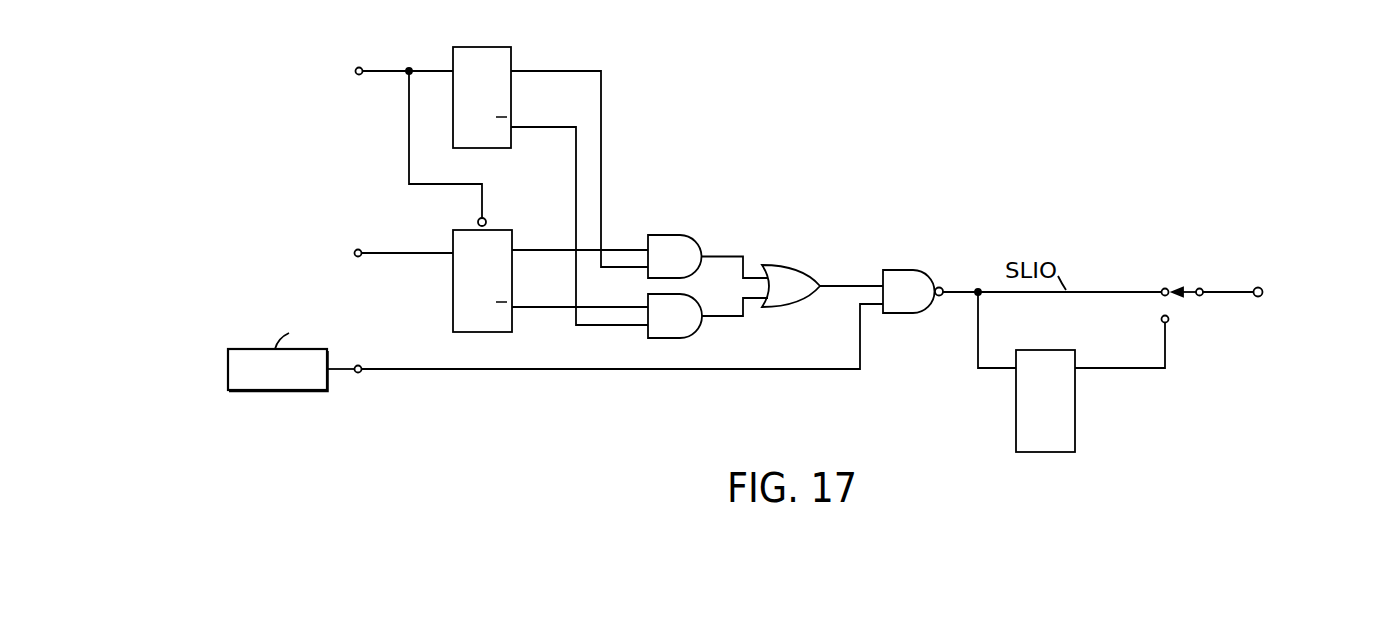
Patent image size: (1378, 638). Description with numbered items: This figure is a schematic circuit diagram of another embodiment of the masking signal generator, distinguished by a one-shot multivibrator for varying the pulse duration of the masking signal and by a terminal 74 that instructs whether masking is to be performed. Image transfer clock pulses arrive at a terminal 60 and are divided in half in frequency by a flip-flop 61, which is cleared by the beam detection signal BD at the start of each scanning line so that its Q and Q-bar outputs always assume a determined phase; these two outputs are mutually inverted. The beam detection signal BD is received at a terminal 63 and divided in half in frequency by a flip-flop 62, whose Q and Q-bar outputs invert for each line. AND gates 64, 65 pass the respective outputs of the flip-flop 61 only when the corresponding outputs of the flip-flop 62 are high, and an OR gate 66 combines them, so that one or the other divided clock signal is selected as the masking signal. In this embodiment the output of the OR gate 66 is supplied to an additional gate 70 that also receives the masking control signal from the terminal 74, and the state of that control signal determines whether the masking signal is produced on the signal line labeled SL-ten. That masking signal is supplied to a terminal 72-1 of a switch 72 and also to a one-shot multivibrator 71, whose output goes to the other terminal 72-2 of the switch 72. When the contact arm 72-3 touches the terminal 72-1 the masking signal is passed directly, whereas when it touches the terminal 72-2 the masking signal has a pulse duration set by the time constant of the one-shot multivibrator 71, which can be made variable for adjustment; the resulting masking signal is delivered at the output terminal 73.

The terminal 60 is at (361, 250).
The flip-flop 61 is at (503, 229).
The flip-flop 62 is at (473, 46).
The terminal 63 is at (362, 68).
The AND gate 64 is at (663, 235).
The AND gate 65 is at (688, 338).
The OR gate 66 is at (780, 265).
The gate 70 is at (895, 270).
The one-shot multivibrator 71 is at (1075, 420).
The switch 72 is at (1203, 289).
The terminal 72-1 is at (1167, 288).
The terminal 72-2 is at (1161, 319).
The contact arm 72-3 is at (1189, 295).
The masking signal output terminal 73 is at (1259, 287).
The terminal 74 is at (361, 366).